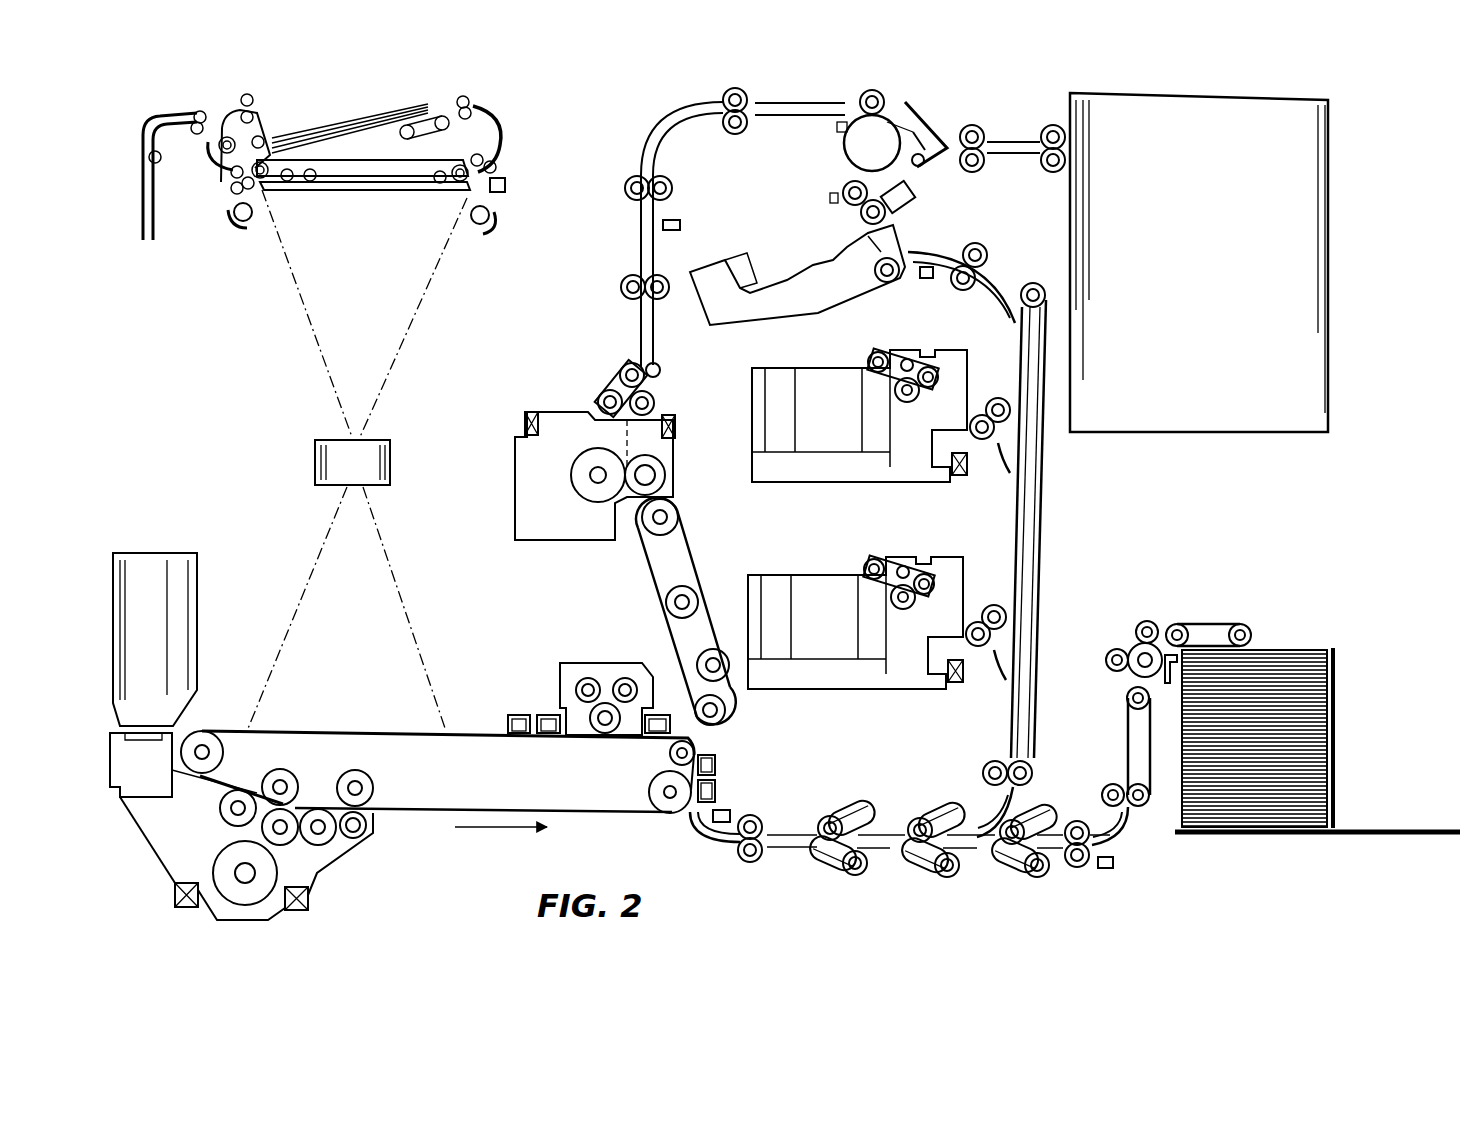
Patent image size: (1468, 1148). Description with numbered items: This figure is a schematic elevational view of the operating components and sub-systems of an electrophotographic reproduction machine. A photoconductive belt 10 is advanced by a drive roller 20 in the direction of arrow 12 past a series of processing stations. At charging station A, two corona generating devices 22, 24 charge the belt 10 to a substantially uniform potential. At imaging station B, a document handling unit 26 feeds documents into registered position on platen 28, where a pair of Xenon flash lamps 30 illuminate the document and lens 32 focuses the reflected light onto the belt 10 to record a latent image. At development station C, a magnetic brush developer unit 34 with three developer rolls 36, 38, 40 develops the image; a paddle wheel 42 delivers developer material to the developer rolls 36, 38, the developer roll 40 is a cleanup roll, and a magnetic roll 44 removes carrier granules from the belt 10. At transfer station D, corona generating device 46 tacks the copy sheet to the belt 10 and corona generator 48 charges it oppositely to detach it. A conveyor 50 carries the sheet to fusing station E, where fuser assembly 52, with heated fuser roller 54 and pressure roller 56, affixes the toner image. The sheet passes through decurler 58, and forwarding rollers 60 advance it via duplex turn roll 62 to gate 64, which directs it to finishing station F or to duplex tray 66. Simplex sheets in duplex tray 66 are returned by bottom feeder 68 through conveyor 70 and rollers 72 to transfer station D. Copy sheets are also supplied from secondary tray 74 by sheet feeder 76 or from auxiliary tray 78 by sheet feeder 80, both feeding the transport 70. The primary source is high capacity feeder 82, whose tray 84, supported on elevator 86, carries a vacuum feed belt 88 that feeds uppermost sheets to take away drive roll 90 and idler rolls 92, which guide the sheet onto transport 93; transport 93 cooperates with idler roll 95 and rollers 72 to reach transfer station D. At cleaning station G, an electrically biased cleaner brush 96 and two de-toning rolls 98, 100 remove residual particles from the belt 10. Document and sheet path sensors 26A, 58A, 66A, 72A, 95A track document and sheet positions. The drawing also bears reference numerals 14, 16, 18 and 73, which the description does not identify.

The photoconductive belt 10 is at (483, 740).
The arrow 12 is at (533, 830).
The belt roller 14 is at (672, 753).
The belt drive roller 16 is at (213, 745).
The belt rollers 18 is at (353, 770).
The drive roller 20 is at (655, 797).
The corona generating device 22 is at (545, 713).
The corona generating device 24 is at (497, 707).
The document handling unit 26 is at (522, 138).
The document path sensor 26A is at (505, 185).
The platen 28 is at (407, 193).
The Xenon flash lamps 30 is at (252, 212).
The lens 32 is at (390, 462).
The magnetic brush developer unit 34 is at (370, 857).
The developer roll 36 is at (213, 825).
The developer roll 38 is at (243, 837).
The developer roll 40 is at (307, 852).
The paddle wheel 42 is at (175, 888).
The magnetic roll 44 is at (370, 830).
The corona generating device 46 is at (717, 802).
The corona generator 48 is at (718, 753).
The conveyor 50 is at (733, 693).
The fuser assembly 52 is at (697, 428).
The heated fuser roller 54 is at (580, 477).
The pressure roller 56 is at (650, 477).
The decurler 58 is at (613, 383).
The sheet path sensor 58A is at (680, 225).
The forwarding rollers 60 is at (633, 185).
The duplex turn roll 62 is at (882, 148).
The gate 64 is at (923, 137).
The duplex tray 66 is at (783, 292).
The sheet path sensor 66A is at (927, 278).
The bottom feeder 68 is at (877, 290).
The conveyor 70 is at (1042, 515).
The rollers 72 is at (762, 835).
The sheet path sensor 72A is at (720, 822).
The transport rollers 73 is at (940, 810).
The secondary tray 74 is at (858, 475).
The sheet feeder 76 is at (910, 353).
The auxiliary tray 78 is at (903, 652).
The sheet feeder 80 is at (892, 557).
The high capacity feeder 82 is at (1357, 628).
The tray 84 is at (1277, 807).
The elevator 86 is at (1293, 834).
The vacuum feed belt 88 is at (1212, 622).
The take away drive roll 90 is at (1148, 665).
The idler rolls 92 is at (1113, 652).
The transport 93 is at (1127, 740).
The idler roll 95 is at (1127, 830).
The sheet path sensor 95A is at (1105, 868).
The cleaner brush 96 is at (605, 703).
The de-toning roll 98 is at (620, 680).
The de-toning roll 100 is at (580, 682).